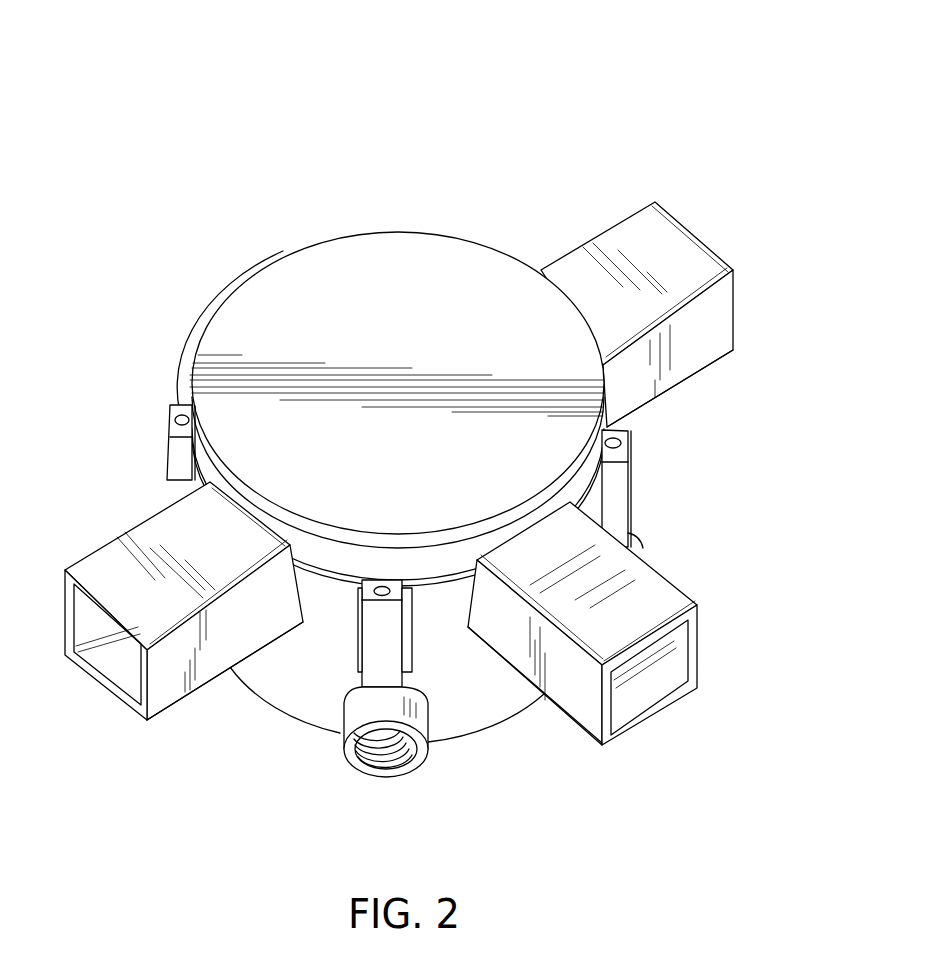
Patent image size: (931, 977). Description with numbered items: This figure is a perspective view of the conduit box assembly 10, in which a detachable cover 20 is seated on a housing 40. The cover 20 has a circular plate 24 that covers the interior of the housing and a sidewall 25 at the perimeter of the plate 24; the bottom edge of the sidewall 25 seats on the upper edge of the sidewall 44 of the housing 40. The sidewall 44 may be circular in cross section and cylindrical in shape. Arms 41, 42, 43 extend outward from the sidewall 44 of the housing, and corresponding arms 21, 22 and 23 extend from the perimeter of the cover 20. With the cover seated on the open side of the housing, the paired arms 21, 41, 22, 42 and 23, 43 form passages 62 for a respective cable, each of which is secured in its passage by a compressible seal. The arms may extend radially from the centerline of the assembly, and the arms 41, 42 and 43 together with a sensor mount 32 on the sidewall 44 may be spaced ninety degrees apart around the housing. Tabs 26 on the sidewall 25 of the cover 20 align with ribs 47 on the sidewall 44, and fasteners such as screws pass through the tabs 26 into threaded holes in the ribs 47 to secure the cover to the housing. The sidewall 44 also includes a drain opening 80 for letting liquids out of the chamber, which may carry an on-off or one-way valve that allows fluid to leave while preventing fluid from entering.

The conduit box assembly 10 is at (440, 422).
The detachable cover 20 is at (452, 255).
The arm 21 is at (105, 568).
The arm 22 is at (651, 604).
The arm 23 is at (672, 237).
The circular plate 24 is at (376, 474).
The sidewall 25 is at (428, 556).
The tabs 26 is at (178, 415).
The sensor mount 32 is at (207, 311).
The housing 40 is at (278, 670).
The arm 41 is at (152, 725).
The arm 42 is at (605, 744).
The arm 43 is at (700, 370).
The sidewall 44 is at (722, 323).
The ribs 47 is at (182, 467).
The passages 62 is at (718, 228).
The drain opening 80 is at (392, 758).